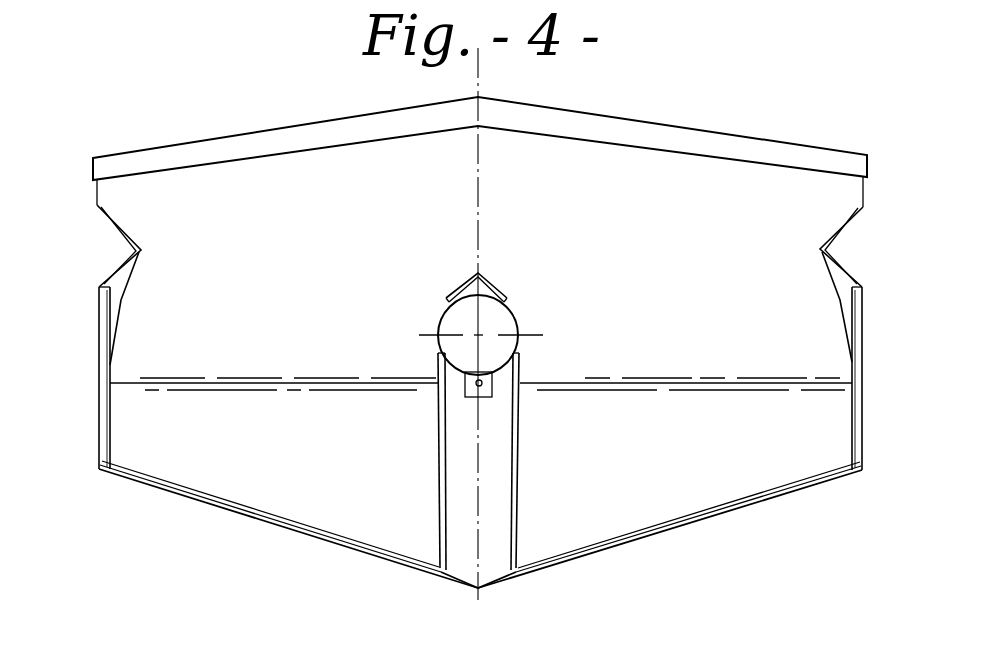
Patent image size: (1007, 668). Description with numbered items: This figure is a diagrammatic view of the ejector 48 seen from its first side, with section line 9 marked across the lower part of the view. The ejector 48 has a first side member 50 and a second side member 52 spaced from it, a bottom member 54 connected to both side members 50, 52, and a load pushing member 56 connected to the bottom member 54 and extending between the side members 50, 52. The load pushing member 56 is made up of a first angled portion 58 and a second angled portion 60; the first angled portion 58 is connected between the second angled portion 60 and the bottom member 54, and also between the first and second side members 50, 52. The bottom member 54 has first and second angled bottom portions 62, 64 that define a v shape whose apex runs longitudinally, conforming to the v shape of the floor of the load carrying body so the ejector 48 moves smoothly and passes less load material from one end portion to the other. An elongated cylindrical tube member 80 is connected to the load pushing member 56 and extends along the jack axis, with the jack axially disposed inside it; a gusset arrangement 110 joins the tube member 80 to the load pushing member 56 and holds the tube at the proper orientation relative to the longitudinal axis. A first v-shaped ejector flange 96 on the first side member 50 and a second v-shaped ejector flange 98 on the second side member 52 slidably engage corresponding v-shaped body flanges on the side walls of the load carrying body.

The ejector 48 is at (553, 158).
The second angled portion 60 is at (594, 225).
The first "v" shaped ejector flange 96 is at (118, 238).
The second "v" shaped ejector flange 98 is at (838, 236).
The first side member 50 is at (99, 328).
The second side member 52 is at (862, 318).
The load pushing member 56 is at (132, 358).
The first angled portion 58 is at (297, 461).
The first angled bottom portion 62 is at (272, 520).
The second angled bottom portion 64 is at (628, 545).
The bottom member 54 is at (475, 588).
The cylindrical tube member 80 is at (516, 316).
The gusset arrangement 110 is at (501, 437).
The section line 9 is at (278, 546).